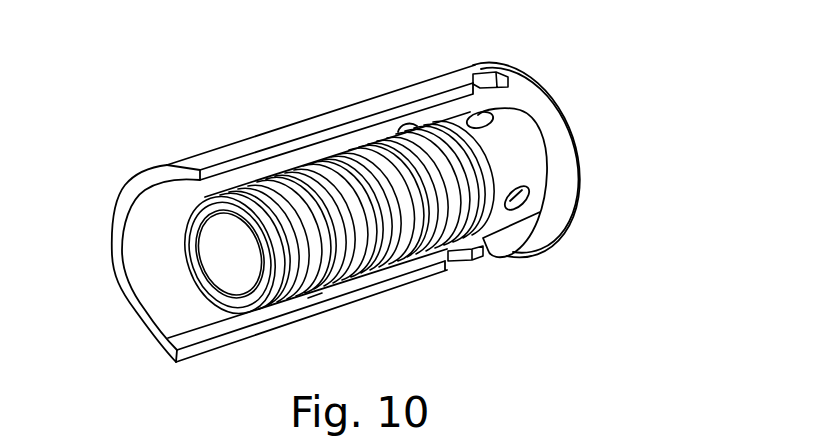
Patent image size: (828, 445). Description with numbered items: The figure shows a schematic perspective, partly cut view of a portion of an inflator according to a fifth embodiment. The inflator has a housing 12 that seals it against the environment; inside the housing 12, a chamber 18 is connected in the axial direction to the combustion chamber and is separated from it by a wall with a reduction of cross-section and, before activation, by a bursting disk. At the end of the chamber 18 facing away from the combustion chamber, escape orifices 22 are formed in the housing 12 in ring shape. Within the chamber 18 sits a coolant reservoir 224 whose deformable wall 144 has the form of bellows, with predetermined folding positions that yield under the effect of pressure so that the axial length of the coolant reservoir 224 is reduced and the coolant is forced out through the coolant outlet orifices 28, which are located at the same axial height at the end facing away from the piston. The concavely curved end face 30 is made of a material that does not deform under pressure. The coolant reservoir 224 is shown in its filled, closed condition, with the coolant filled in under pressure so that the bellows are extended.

The housing 12 is at (370, 113).
The chamber 18 is at (285, 157).
The escape orifices 22 is at (482, 70).
The coolant outlet orifices 28 is at (482, 119).
The end face 30 is at (228, 263).
The deformable wall 144 is at (362, 246).
The coolant reservoir 224 is at (316, 304).